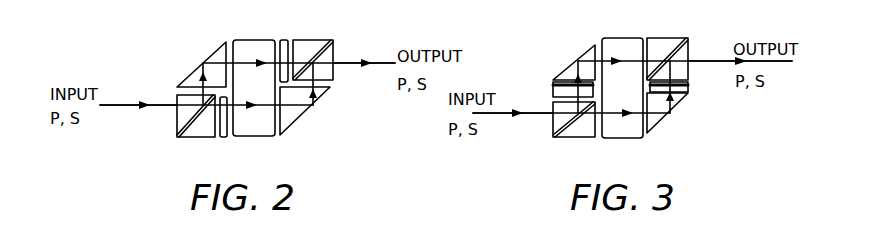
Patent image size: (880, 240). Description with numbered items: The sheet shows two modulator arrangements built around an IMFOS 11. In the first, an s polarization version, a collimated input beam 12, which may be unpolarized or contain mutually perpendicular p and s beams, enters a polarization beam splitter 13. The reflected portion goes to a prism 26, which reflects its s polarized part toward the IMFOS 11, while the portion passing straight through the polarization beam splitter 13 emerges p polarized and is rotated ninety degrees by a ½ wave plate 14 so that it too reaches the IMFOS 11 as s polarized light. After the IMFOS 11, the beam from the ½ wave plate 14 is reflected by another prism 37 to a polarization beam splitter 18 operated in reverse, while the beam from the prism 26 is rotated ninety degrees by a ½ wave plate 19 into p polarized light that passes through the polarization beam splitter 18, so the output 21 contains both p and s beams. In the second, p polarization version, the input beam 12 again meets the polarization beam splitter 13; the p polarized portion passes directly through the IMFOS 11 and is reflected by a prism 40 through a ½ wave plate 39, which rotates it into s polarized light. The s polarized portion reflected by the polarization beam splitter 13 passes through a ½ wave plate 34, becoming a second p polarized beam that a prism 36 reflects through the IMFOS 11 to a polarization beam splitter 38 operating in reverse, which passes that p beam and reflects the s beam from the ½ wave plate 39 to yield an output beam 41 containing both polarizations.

In FIG. 2, the IMFOS 11 is at (265, 137).
In FIG. 3, the IMFOS 11 is at (632, 138).
In FIG. 2, the collimated input beam 12 is at (127, 105).
In FIG. 3, the collimated input beam 12 is at (510, 113).
In FIG. 2, the polarization beam splitter 13 is at (203, 162).
In FIG. 3, the polarization beam splitter 13 is at (578, 165).
In FIG. 2, the ½ wave plate 14 is at (223, 137).
In FIG. 2, the polarization beam splitter 18 is at (328, 24).
In FIG. 2, the ½ wave plate 19 is at (285, 40).
In FIG. 2, the output 21 is at (382, 63).
In FIG. 2, the prism 26 is at (218, 50).
In FIG. 3, the ½ wave plate 34 is at (553, 88).
In FIG. 3, the prism 36 is at (568, 65).
In FIG. 2, the prism 37 is at (303, 107).
In FIG. 3, the polarization beam splitter 38 is at (688, 25).
In FIG. 3, the ½ wave plate 39 is at (688, 86).
In FIG. 3, the prism 40 is at (658, 118).
In FIG. 3, the output beam 41 is at (787, 63).